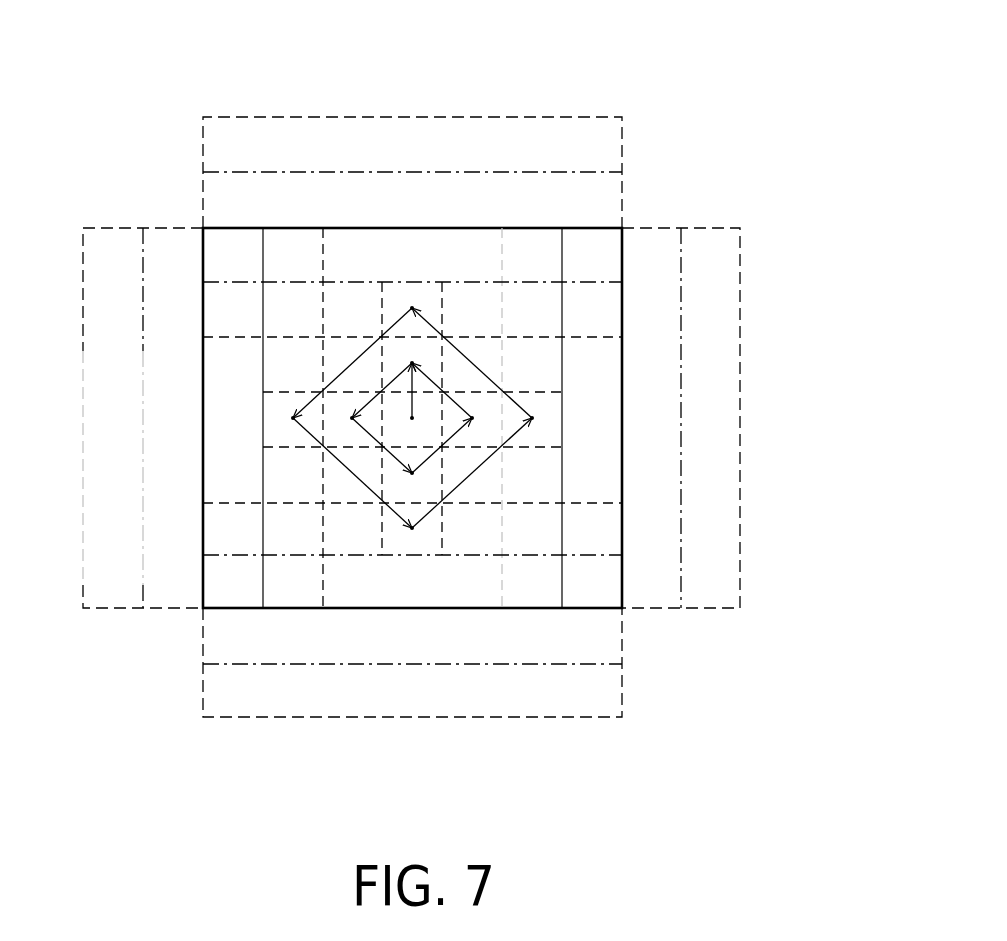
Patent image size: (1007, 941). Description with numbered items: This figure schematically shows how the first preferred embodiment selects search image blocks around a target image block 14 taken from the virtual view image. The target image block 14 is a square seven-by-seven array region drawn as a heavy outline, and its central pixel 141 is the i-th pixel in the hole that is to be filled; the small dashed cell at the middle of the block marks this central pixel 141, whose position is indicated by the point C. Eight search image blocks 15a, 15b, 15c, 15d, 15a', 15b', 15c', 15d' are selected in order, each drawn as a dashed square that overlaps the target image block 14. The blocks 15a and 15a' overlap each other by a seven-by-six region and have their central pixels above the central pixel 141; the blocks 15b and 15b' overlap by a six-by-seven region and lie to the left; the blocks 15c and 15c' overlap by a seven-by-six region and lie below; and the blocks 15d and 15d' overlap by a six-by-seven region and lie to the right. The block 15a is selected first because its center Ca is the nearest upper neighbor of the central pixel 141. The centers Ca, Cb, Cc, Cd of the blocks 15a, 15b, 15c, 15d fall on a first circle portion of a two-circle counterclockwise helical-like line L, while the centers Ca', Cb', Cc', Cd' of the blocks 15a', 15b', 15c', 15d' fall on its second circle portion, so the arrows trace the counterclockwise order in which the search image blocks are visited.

The target image block 14 is at (471, 358).
The central pixel of the target image block 141 is at (398, 390).
The helical-like line L is at (352, 346).
The search image block 15a is at (461, 117).
The search image block 15a' is at (440, 89).
The search image block 15b is at (125, 483).
The search image block 15b' is at (95, 475).
The search image block 15c is at (469, 711).
The search image block 15c' is at (445, 739).
The search image block 15d is at (746, 364).
The search image block 15d' is at (775, 418).
The center point of pixel C is at (402, 423).
The center of search image block Ca is at (427, 365).
The center of search image block Cb is at (344, 423).
The center of search image block Cc is at (408, 484).
The center of search image block Cd is at (487, 423).
The center of search image block Ca' is at (414, 297).
The center of search image block Cb' is at (282, 423).
The center of search image block Cc' is at (429, 541).
The center of search image block Cd' is at (550, 418).